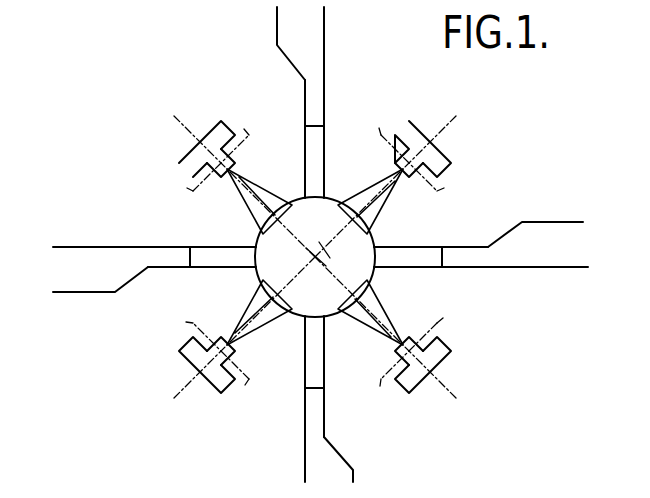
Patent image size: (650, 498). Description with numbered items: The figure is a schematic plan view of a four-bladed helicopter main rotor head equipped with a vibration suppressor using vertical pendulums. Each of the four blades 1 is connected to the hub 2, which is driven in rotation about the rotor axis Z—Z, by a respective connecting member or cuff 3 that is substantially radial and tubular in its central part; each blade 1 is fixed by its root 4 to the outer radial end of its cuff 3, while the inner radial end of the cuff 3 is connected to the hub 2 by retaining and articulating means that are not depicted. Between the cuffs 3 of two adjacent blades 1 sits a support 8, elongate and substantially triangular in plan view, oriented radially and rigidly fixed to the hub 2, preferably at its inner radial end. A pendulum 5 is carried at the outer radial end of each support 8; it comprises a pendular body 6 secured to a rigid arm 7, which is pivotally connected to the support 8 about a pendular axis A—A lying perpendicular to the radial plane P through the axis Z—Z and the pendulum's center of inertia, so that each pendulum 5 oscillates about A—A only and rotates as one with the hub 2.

The blade 1 is at (297, 32).
The hub 2 is at (348, 260).
The connecting member (cuff) 3 is at (315, 147).
The root 4 is at (315, 103).
The vertical pendulum 5 is at (183, 148).
The pendular body 6 is at (225, 120).
The rigid arm 7 is at (227, 172).
The support 8 is at (260, 192).